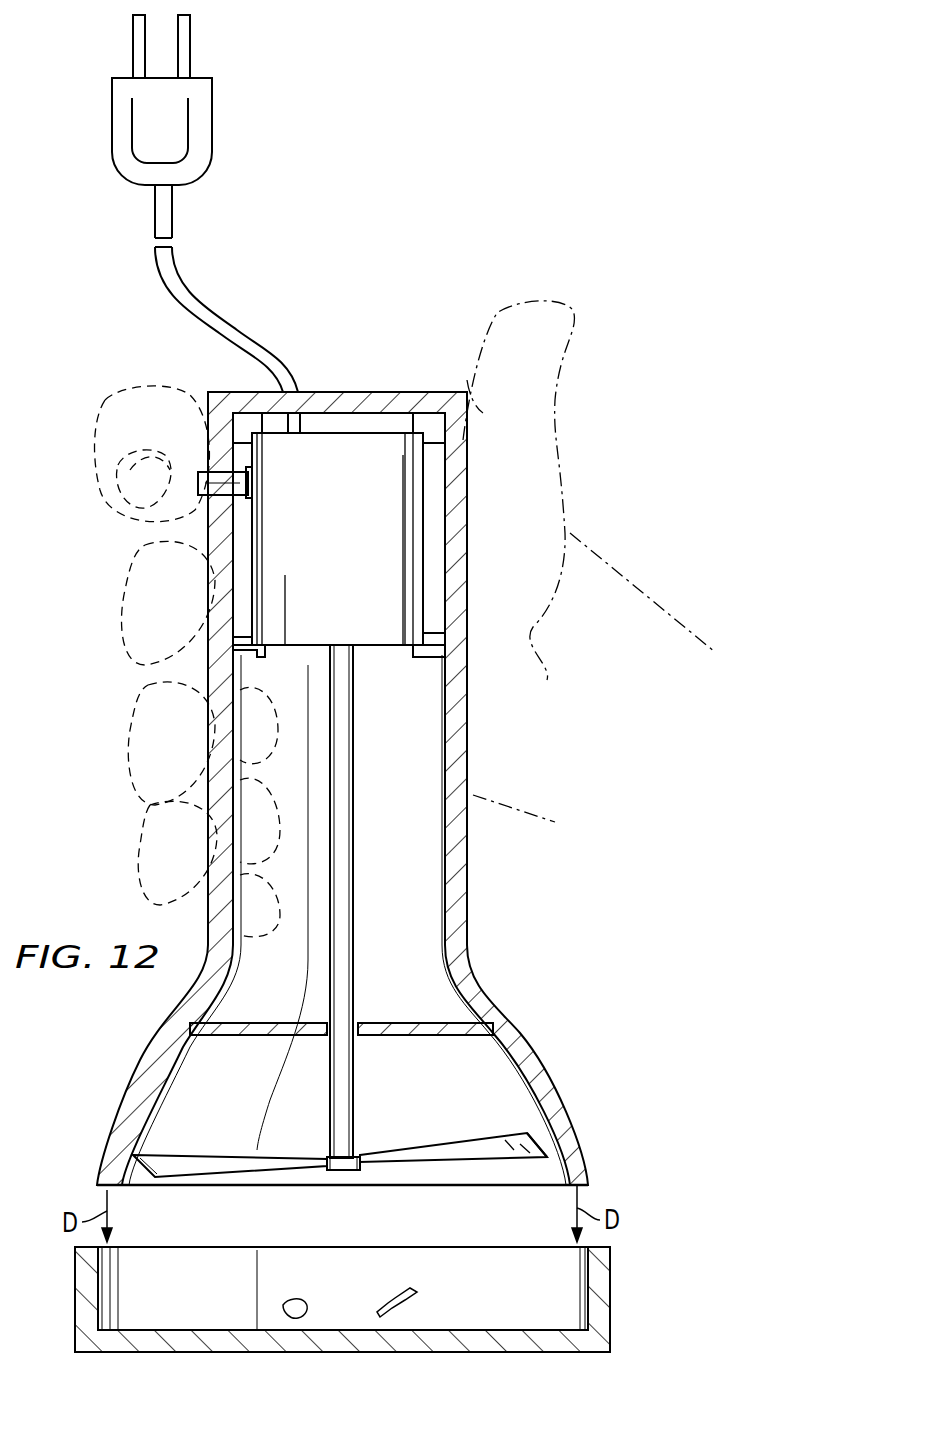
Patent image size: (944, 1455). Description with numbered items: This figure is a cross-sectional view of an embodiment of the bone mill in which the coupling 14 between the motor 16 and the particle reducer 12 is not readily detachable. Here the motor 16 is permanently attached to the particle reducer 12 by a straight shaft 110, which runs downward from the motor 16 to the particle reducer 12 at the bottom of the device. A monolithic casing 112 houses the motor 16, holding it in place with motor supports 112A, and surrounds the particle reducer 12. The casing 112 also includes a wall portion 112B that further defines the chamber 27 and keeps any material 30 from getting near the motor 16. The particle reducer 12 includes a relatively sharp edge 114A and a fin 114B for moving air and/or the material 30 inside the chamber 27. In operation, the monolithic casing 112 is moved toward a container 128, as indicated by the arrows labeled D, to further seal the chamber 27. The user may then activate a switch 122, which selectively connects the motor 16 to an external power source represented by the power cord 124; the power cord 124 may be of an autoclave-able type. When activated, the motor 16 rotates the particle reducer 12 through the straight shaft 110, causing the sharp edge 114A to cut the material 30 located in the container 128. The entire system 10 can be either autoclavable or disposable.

The system 10 is at (431, 258).
The particle reducer 12 is at (383, 1165).
The coupling 14 is at (354, 1058).
The straight shaft 110 is at (343, 1163).
The motor 16 is at (352, 572).
The chamber 27 is at (313, 1124).
The material 30 is at (300, 1298).
The monolithic casing 112 is at (463, 877).
The motor supports 112A is at (428, 648).
The wall portion 112B is at (395, 1025).
The sharp edge 114A is at (200, 1153).
The fin 114B is at (485, 1143).
The switch 122 is at (250, 482).
The power cord 124 is at (112, 112).
The container 128 is at (603, 1290).